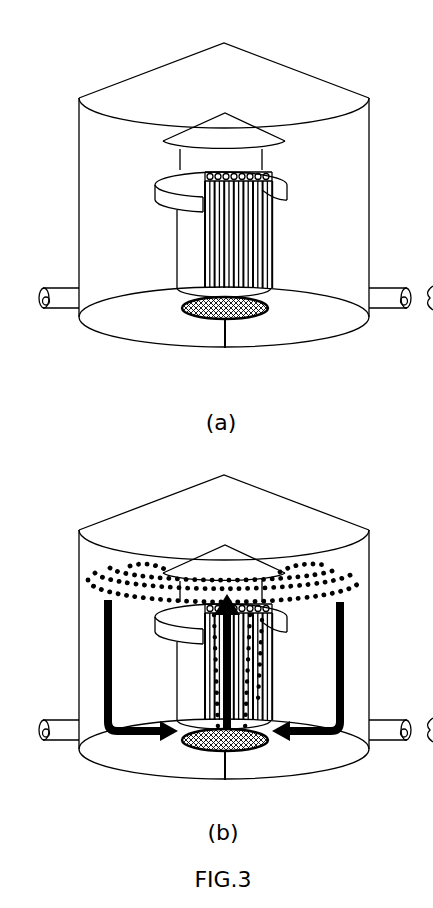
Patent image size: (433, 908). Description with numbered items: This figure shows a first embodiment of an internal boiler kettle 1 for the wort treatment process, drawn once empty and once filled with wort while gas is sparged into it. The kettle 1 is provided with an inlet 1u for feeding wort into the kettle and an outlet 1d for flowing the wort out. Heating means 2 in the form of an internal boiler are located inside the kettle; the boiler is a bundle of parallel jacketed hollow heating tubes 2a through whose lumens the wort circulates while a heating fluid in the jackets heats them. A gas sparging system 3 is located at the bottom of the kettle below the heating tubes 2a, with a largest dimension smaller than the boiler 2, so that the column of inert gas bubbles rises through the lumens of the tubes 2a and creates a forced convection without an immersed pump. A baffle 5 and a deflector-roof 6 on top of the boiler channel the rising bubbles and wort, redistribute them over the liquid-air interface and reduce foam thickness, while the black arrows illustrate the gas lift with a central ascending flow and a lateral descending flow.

The kettle 1 is at (118, 64).
The inlet 1u is at (68, 288).
The outlet 1d is at (392, 288).
The heating means 2 is at (176, 232).
The hollow heating tubes 2a is at (272, 241).
The gas sparging system 3 is at (238, 318).
The baffle 5 is at (156, 186).
The deflector-roof 6 is at (165, 140).